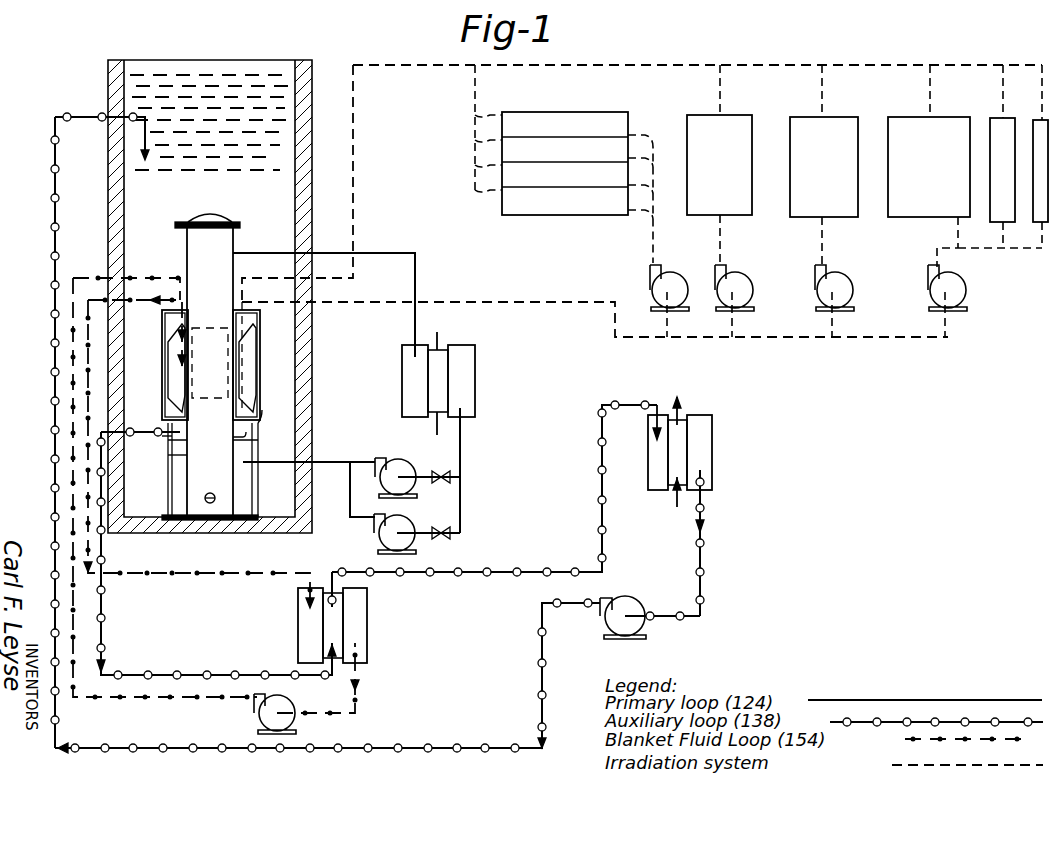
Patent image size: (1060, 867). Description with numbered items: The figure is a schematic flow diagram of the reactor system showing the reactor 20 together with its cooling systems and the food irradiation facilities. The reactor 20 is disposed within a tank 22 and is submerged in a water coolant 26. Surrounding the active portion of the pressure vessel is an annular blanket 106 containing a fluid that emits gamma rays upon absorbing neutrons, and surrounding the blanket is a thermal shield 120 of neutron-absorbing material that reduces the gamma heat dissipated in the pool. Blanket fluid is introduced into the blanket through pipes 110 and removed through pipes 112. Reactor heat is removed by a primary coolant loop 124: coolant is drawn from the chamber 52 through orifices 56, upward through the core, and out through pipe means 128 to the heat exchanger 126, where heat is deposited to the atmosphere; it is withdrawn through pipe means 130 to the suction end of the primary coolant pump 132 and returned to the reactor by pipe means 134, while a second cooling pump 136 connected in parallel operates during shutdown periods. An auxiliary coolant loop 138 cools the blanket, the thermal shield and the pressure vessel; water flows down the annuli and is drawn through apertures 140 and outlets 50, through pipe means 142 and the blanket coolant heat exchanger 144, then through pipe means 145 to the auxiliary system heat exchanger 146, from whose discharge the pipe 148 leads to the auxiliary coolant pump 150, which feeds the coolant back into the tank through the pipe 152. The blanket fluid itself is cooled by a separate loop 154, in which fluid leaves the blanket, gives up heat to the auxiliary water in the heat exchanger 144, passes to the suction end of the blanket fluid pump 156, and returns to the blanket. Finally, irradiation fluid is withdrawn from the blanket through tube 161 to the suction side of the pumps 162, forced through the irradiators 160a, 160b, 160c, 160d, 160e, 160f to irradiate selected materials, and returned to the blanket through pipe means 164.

The reactor 20 is at (236, 222).
The tank 22 is at (232, 196).
The water coolant 26 is at (137, 76).
The outlets 50 is at (164, 437).
The chamber 52 is at (180, 467).
The orifices 56 is at (205, 498).
The blanket 106 is at (259, 352).
The pipes 110 is at (88, 360).
The pipes 112 is at (73, 324).
The thermal shield 120 is at (262, 412).
The primary coolant loop 124 is at (372, 394).
The heat exchanger 126 is at (462, 372).
The pipe means 128 is at (416, 283).
The pipe means 130 is at (463, 460).
The primary coolant pump 132 is at (406, 446).
The pipe means 134 is at (325, 462).
The second cooling pump 136 is at (410, 520).
The auxiliary coolant loop 138 is at (672, 548).
The apertures 140 is at (240, 437).
The pipe means 142 is at (103, 632).
The blanket coolant heat exchanger 144 is at (357, 622).
The pipe means 145 is at (498, 572).
The auxiliary system heat exchanger 146 is at (702, 438).
The pipe 148 is at (702, 563).
The auxiliary coolant pump 150 is at (627, 603).
The pipe 152 is at (408, 748).
The separate loop 154 is at (230, 639).
The blanket fluid pump 156 is at (286, 708).
The irradiator 160a is at (808, 118).
The irradiator 160b is at (913, 120).
The irradiator 160c is at (705, 120).
The irradiator 160d is at (557, 118).
The irradiator 160e is at (997, 122).
The irradiator 160f is at (1040, 120).
The tube 161 is at (330, 304).
The pumps 162 is at (668, 280).
The pipe means 164 is at (356, 174).